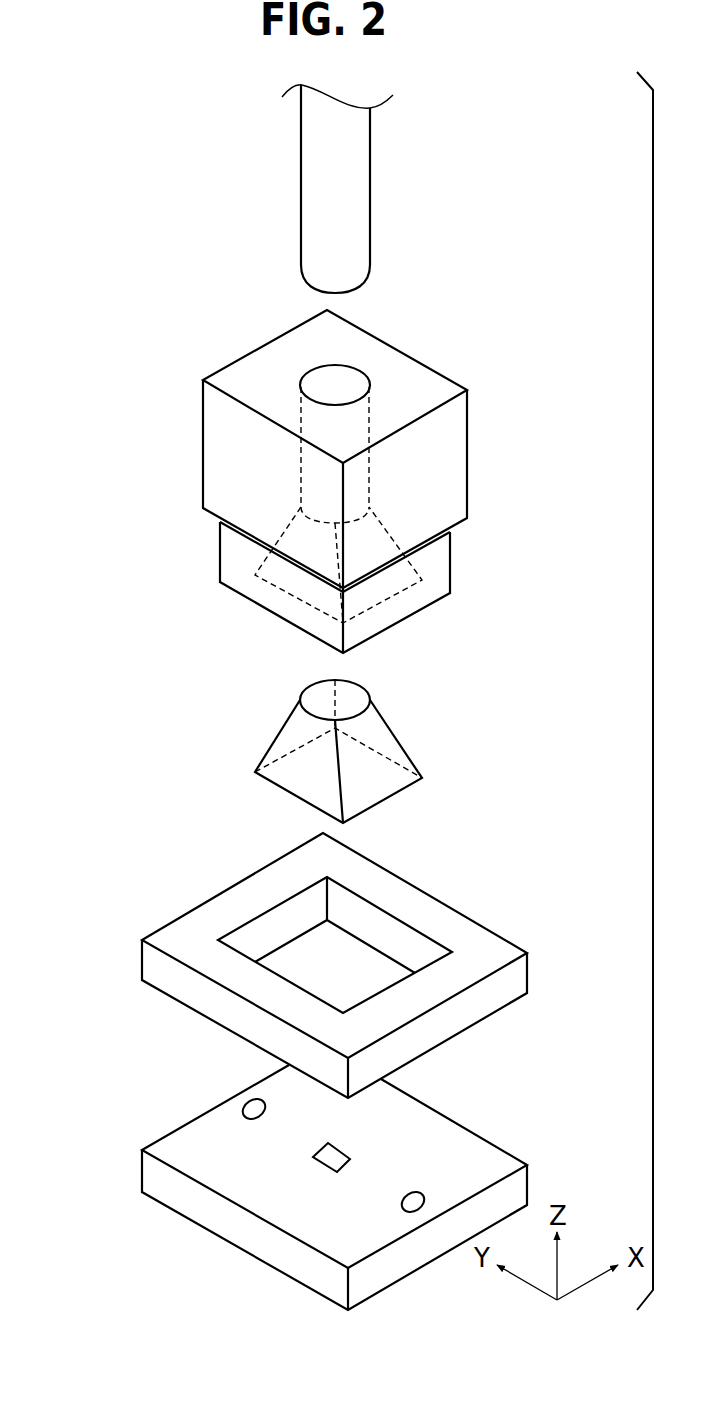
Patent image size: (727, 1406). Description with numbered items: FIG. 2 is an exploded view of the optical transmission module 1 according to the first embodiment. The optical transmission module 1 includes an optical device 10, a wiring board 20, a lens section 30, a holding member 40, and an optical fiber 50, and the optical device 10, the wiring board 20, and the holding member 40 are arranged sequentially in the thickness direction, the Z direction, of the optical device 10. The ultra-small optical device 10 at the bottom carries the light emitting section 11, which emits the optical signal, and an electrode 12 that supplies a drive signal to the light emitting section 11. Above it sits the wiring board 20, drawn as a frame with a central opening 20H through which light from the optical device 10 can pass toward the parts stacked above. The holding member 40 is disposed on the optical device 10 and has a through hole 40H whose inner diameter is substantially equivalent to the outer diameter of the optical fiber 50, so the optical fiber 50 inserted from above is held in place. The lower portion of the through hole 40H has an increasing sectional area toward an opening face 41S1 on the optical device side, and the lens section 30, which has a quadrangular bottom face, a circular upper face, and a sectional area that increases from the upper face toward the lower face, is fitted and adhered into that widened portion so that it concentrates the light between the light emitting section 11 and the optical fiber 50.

The optical transmission module 1 is at (498, 183).
The optical device 10 is at (142, 1176).
The light emitting section 11 is at (330, 1170).
The electrode 12 is at (243, 1110).
The wiring board 20 is at (142, 961).
The opening 20H is at (340, 953).
The lens section 30 is at (280, 732).
The holding member 40 is at (203, 416).
The through hole 40H is at (335, 387).
The opening face 41S1 is at (363, 594).
The optical fiber 50 is at (300, 167).